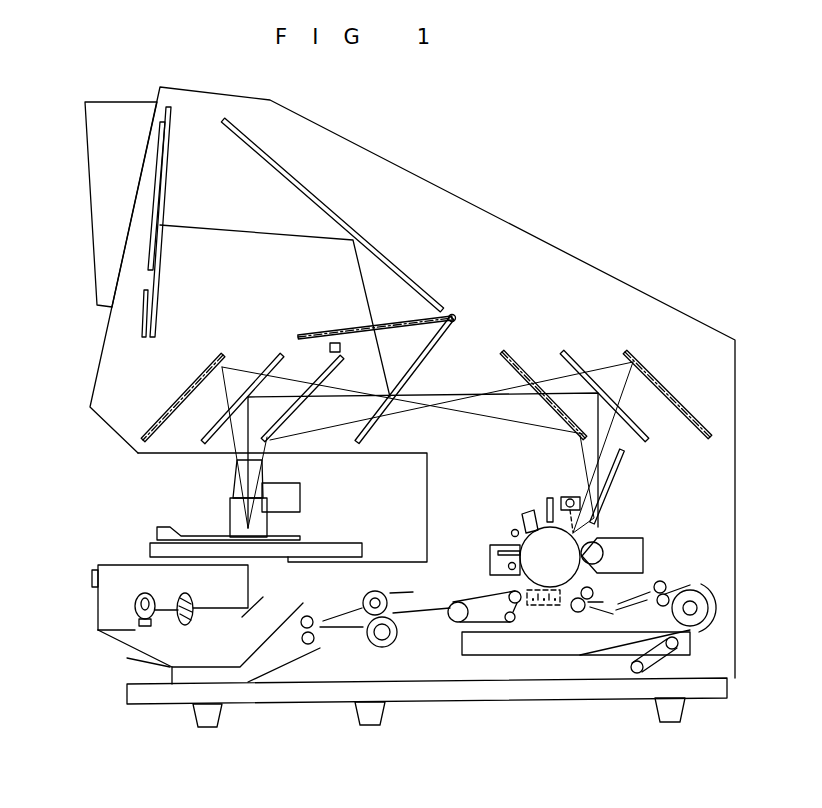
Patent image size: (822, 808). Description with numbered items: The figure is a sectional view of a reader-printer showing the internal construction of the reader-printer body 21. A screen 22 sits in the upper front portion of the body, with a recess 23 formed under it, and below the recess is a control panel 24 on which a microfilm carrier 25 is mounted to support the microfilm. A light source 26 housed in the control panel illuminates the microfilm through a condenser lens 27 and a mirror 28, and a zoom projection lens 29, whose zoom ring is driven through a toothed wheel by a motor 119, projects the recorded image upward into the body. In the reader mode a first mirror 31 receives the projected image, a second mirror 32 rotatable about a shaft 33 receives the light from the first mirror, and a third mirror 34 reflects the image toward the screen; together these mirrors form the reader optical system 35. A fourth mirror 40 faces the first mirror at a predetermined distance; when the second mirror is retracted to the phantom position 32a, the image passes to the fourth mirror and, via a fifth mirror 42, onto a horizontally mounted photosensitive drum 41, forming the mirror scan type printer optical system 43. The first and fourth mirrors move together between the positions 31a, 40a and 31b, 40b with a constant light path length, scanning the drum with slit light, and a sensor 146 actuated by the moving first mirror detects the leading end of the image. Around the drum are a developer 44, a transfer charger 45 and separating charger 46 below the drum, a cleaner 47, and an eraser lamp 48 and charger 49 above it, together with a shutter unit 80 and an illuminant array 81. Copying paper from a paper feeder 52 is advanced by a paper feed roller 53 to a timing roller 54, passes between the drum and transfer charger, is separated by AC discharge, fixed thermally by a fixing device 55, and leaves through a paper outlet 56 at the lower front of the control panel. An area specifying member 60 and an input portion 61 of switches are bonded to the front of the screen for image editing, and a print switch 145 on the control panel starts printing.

The reader-printer body 21 is at (450, 190).
The screen 22 is at (171, 163).
The recess 23 is at (190, 510).
The control panel 24 is at (98, 603).
The microfilm carrier 25 is at (155, 528).
The light source 26 is at (137, 613).
The condenser lens 27 is at (183, 628).
The mirror 28 is at (242, 617).
The zoom projection lens 29 is at (233, 482).
The first mirror 31 is at (281, 357).
The first mirror position 31a is at (198, 373).
The first mirror position 31b is at (338, 358).
The second mirror 32 is at (420, 362).
The retracted second mirror position 32a is at (305, 337).
The shaft 33 is at (456, 318).
The third mirror 34 is at (427, 291).
The reader optical system 35 is at (260, 292).
The fourth mirror 40 is at (648, 443).
The fourth mirror position 40a is at (513, 352).
The fourth mirror position 40b is at (677, 400).
The photosensitive drum 41 is at (575, 540).
The fifth mirror 42 is at (619, 473).
The printer optical system 43 is at (610, 340).
The developer 44 is at (645, 547).
The transfer charger 45 is at (553, 607).
The separating charger 46 is at (533, 606).
The cleaner 47 is at (490, 552).
The eraser lamp 48 is at (513, 529).
The charger 49 is at (526, 514).
The paper feeder 52 is at (473, 650).
The paper feed roller 53 is at (712, 609).
The timing roller 54 is at (620, 597).
The fixing device 55 is at (382, 648).
The paper outlet 56 is at (155, 671).
The area specifying member 60 is at (157, 163).
The input portion 61 is at (142, 323).
The shutter unit 80 is at (571, 497).
The illuminant array 81 is at (550, 498).
The motor 119 is at (300, 497).
The print switch 145 is at (92, 578).
The sensor 146 is at (336, 352).